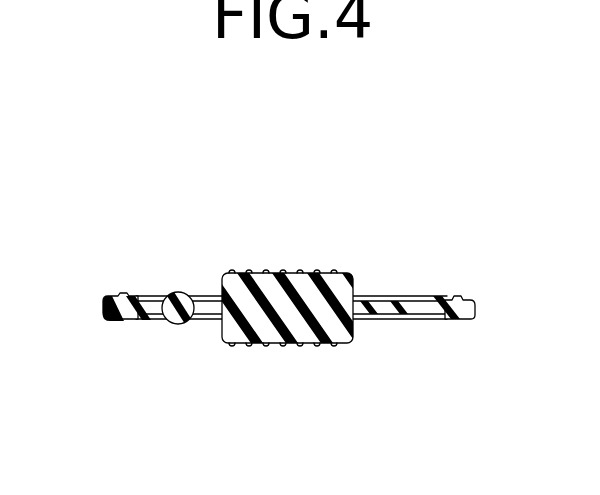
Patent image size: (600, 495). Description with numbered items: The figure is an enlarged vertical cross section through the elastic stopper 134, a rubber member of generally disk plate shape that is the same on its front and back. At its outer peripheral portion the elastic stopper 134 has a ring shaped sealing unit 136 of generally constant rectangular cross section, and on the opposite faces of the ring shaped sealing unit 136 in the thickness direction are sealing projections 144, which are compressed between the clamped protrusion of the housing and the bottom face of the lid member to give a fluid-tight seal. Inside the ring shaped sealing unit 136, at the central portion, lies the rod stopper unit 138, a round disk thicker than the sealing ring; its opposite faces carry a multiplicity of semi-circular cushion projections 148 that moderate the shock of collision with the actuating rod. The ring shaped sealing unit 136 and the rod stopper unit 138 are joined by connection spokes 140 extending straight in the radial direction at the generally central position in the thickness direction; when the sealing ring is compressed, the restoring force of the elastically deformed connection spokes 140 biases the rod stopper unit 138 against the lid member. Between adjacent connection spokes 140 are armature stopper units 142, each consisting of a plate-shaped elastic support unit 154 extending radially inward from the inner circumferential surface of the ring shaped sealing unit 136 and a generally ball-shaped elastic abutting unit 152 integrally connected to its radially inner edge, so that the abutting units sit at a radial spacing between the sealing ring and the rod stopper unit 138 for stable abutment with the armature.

The elastic stopper 134 is at (476, 221).
The ring shaped sealing unit 136 is at (103, 310).
The rod stopper unit 138 is at (346, 328).
The connection spokes 140 is at (210, 296).
The armature stopper units 142 is at (202, 423).
The sealing projections 144 is at (128, 293).
The cushion projections 148 is at (256, 273).
The elastic abutting unit 152 is at (185, 324).
The elastic support unit 154 is at (150, 321).